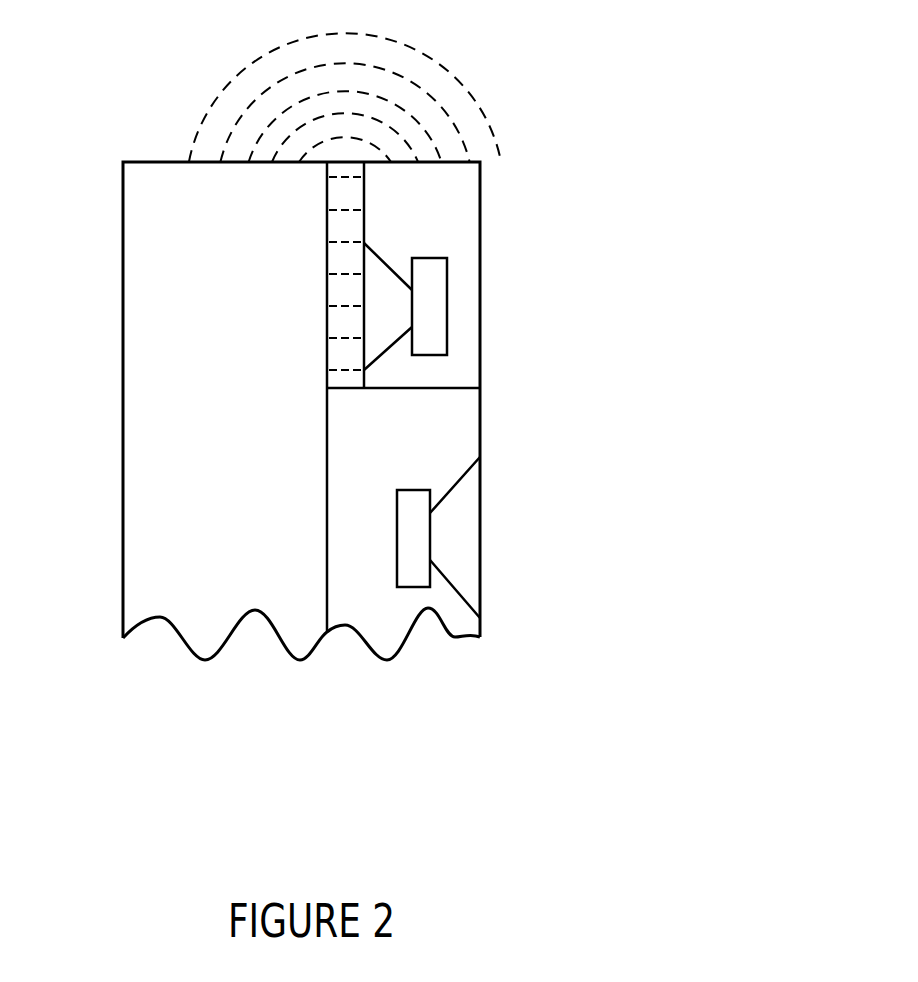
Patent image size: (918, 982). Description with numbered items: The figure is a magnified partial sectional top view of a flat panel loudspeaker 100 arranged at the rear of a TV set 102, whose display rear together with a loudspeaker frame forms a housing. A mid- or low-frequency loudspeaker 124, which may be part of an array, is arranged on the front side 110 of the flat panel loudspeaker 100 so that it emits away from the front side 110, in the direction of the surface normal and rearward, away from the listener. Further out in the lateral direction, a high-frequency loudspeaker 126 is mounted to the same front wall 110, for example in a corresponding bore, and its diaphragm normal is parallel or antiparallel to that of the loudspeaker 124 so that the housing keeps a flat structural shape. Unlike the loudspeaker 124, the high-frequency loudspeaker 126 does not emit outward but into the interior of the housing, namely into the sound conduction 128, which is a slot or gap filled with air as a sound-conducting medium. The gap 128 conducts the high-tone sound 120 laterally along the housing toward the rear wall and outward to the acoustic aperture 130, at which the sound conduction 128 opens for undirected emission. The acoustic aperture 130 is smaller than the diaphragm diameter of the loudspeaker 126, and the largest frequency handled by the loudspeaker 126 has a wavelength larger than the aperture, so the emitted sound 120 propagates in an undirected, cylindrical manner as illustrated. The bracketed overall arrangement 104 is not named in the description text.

The flat panel loudspeaker 100 is at (480, 678).
The TV set 102 is at (123, 176).
The device 104 is at (480, 733).
The front side 110 is at (480, 198).
The high-tone sound 120 is at (437, 102).
The mid- or low-frequency loudspeaker 124 is at (395, 505).
The high-frequency loudspeaker 126 is at (430, 258).
The sound conduction 128 is at (340, 258).
The acoustic aperture 130 is at (347, 153).